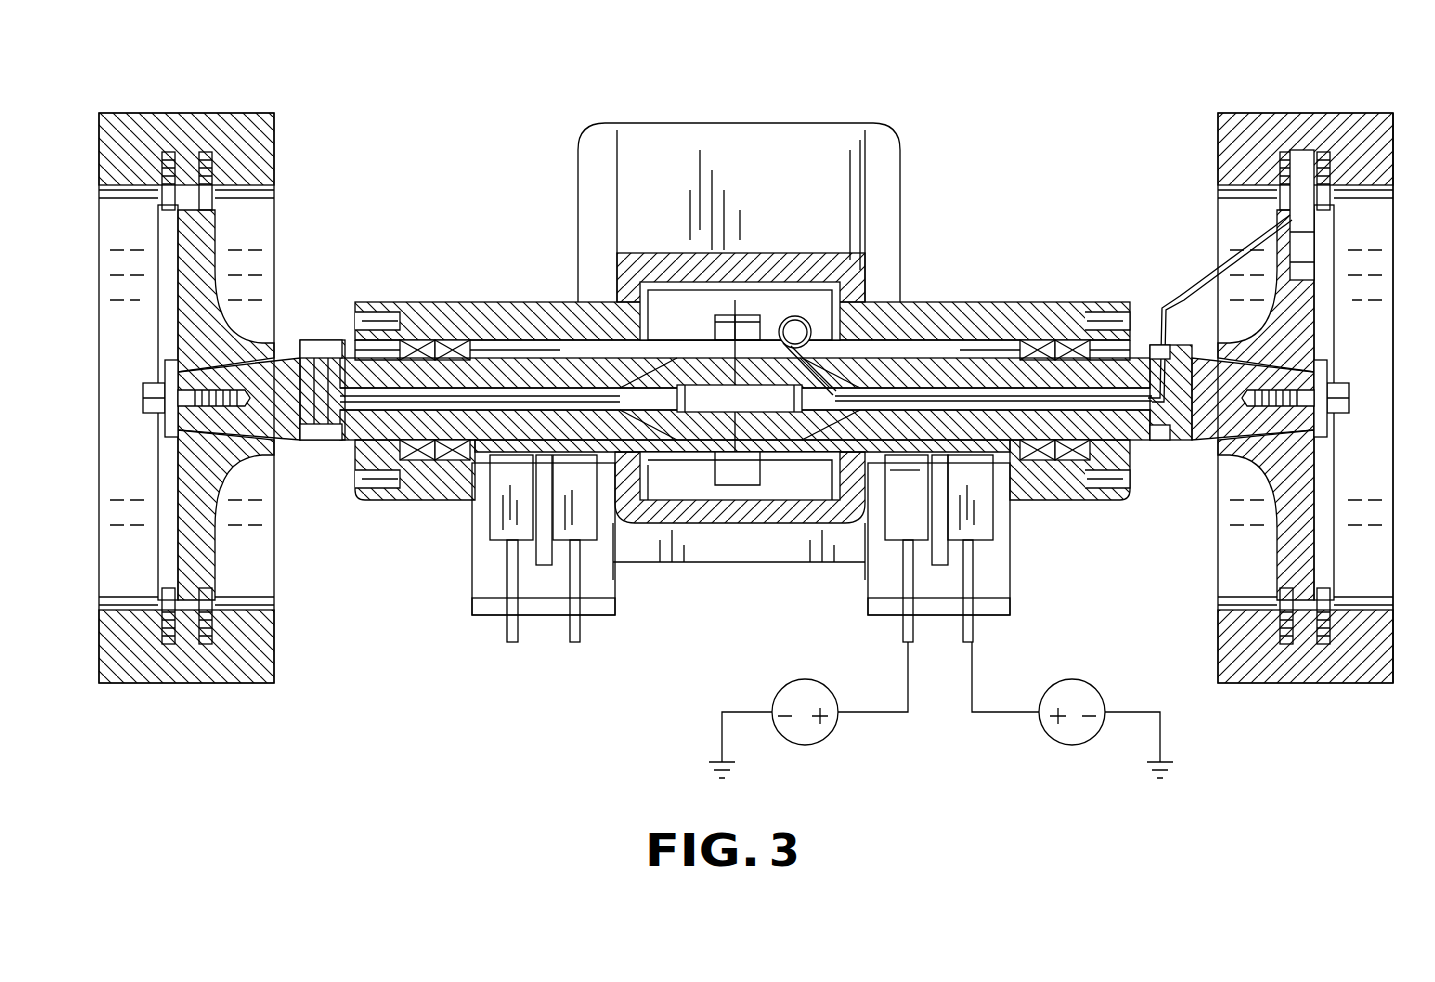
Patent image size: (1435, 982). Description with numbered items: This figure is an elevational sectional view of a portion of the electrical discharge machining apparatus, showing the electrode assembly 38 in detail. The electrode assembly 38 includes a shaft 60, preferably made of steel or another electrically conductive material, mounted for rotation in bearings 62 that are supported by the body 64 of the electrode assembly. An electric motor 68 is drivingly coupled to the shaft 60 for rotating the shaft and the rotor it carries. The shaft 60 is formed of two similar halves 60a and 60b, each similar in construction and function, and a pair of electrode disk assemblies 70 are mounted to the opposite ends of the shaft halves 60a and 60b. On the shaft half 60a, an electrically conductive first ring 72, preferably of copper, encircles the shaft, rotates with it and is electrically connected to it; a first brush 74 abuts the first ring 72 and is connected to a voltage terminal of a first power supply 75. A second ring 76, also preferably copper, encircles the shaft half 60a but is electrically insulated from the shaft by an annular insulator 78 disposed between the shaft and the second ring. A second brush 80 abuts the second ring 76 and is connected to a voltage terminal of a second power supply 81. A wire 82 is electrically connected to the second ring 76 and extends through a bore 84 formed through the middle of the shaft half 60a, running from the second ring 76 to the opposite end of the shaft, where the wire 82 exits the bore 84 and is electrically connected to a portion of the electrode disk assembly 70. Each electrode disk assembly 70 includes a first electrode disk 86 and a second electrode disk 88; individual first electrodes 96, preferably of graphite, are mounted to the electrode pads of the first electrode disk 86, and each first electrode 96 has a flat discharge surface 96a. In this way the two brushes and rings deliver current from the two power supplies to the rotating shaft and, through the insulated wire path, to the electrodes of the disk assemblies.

The electrode assembly 38 is at (1003, 122).
The shaft 60 is at (1142, 448).
The shaft half 60a is at (1142, 344).
The shaft half 60b is at (300, 345).
The bearings 62 is at (1042, 458).
The body 64 is at (962, 302).
The electric motor 68 is at (905, 182).
The electrode disk assembly 70 is at (238, 104).
The first ring 72 is at (1000, 458).
The first brush 74 is at (985, 540).
The first power supply 75 is at (1075, 748).
The second ring 76 is at (908, 302).
The annular insulator 78 is at (840, 432).
The second brush 80 is at (892, 548).
The second power supply 81 is at (820, 745).
The wire 82 is at (797, 316).
The bore 84 is at (968, 392).
The first electrode disk 86 is at (1330, 232).
The second electrode disk 88 is at (1262, 218).
The first electrode 96 is at (1268, 112).
The flat discharge surface 96a is at (1395, 114).